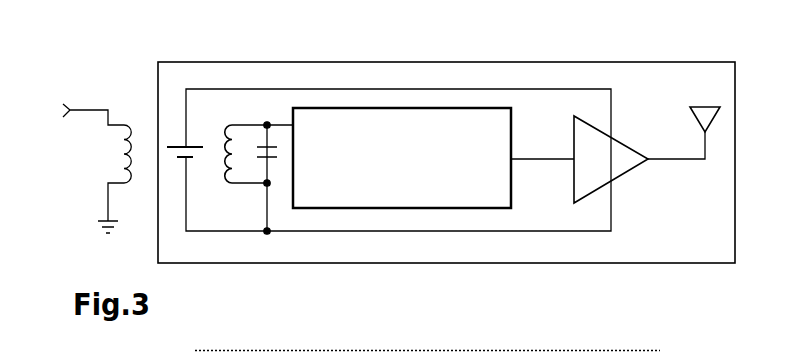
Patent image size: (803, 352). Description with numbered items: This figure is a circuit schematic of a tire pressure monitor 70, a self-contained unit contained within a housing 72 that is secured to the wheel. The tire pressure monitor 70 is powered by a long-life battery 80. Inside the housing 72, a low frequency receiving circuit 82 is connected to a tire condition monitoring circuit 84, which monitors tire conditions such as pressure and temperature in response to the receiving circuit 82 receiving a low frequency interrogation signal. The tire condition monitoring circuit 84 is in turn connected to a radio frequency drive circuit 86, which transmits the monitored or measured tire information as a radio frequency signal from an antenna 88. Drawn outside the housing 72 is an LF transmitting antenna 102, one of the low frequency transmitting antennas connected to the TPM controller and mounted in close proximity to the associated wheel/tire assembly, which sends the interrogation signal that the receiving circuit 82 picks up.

The tire pressure monitor 70 is at (480, 47).
The housing 72 is at (273, 62).
The battery 80 is at (192, 161).
The low frequency receiving circuit 82 is at (258, 120).
The tire condition monitoring circuit 84 is at (498, 190).
The radio frequency drive circuit 86 is at (620, 152).
The antenna 88 is at (700, 107).
The LF transmitting antenna 102 is at (122, 160).